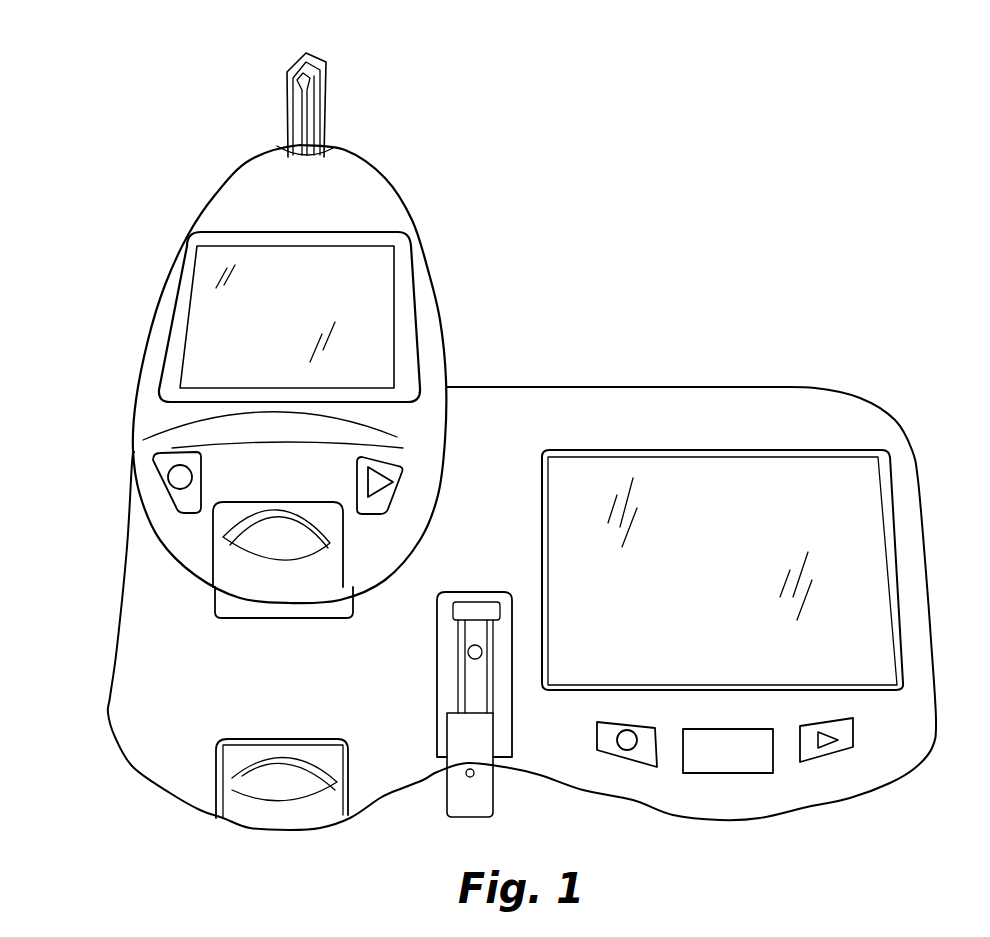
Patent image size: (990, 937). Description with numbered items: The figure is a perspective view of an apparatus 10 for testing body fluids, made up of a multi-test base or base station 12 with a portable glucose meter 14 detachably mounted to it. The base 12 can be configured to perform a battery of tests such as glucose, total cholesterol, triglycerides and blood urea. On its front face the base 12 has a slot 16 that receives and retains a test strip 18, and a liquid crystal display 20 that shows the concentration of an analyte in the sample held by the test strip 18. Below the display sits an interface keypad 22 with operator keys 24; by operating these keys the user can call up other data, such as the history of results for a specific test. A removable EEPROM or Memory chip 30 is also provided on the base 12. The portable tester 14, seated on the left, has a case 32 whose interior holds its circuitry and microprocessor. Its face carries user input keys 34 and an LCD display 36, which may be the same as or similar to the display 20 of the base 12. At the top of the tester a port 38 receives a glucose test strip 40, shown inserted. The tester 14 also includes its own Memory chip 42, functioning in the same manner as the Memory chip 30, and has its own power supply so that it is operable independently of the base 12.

The apparatus 10 is at (560, 276).
The base station 12 is at (710, 366).
The portable glucose meter 14 is at (430, 189).
The slot 16 is at (452, 671).
The test strip 18 is at (460, 783).
The liquid crystal display 20 is at (850, 540).
The interface keypad 22 is at (690, 800).
The operator keys 24 is at (625, 748).
The Memory chip 30 is at (267, 772).
The case 32 is at (157, 418).
The user input keys 34 is at (172, 479).
The LCD display 36 is at (220, 317).
The port 38 is at (280, 143).
The glucose test strip 40 is at (320, 100).
The Memory chip 42 is at (247, 540).